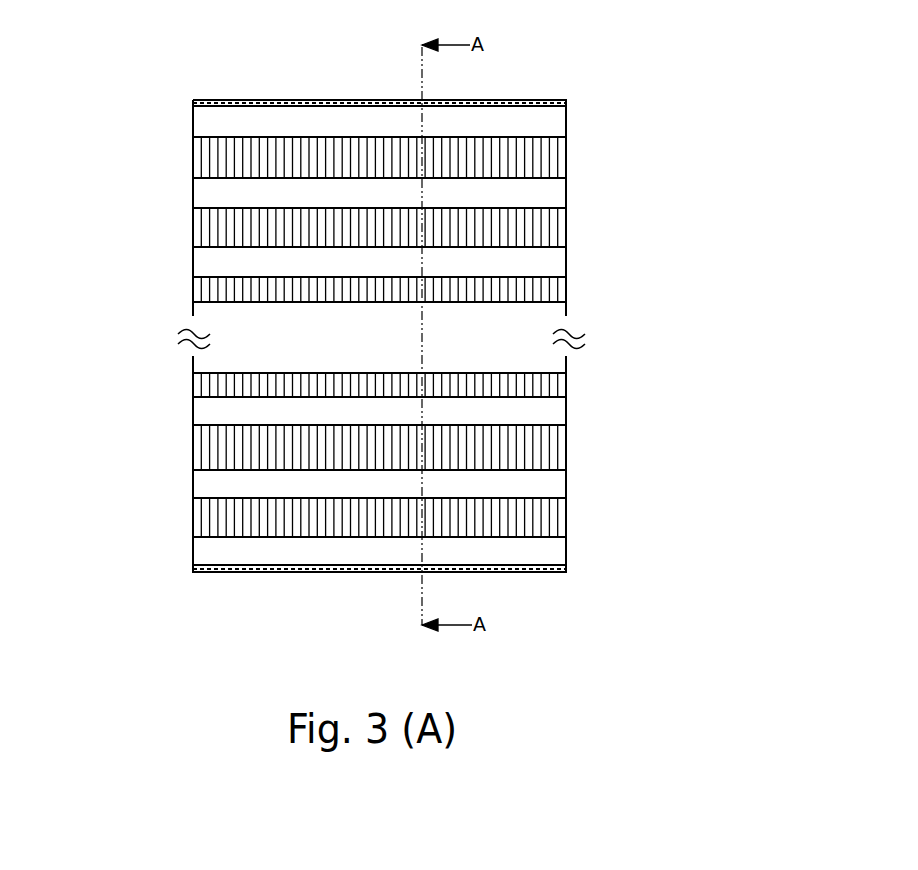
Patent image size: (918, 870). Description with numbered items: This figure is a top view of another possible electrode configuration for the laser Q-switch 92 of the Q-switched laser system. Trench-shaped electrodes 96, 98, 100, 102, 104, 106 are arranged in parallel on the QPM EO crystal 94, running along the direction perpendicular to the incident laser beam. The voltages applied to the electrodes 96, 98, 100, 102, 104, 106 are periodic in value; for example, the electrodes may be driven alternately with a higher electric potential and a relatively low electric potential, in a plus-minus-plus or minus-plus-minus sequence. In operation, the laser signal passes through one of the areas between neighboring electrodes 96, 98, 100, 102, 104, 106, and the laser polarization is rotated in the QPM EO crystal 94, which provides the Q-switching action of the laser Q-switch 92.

The laser Q-switch 92 is at (538, 101).
The QPM EO crystal 94 is at (210, 153).
The trench-shaped electrode 96 is at (291, 120).
The trench-shaped electrode 98 is at (225, 262).
The trench-shaped electrode 100 is at (240, 192).
The trench-shaped electrode 102 is at (227, 407).
The trench-shaped electrode 104 is at (225, 552).
The trench-shaped electrode 106 is at (227, 480).